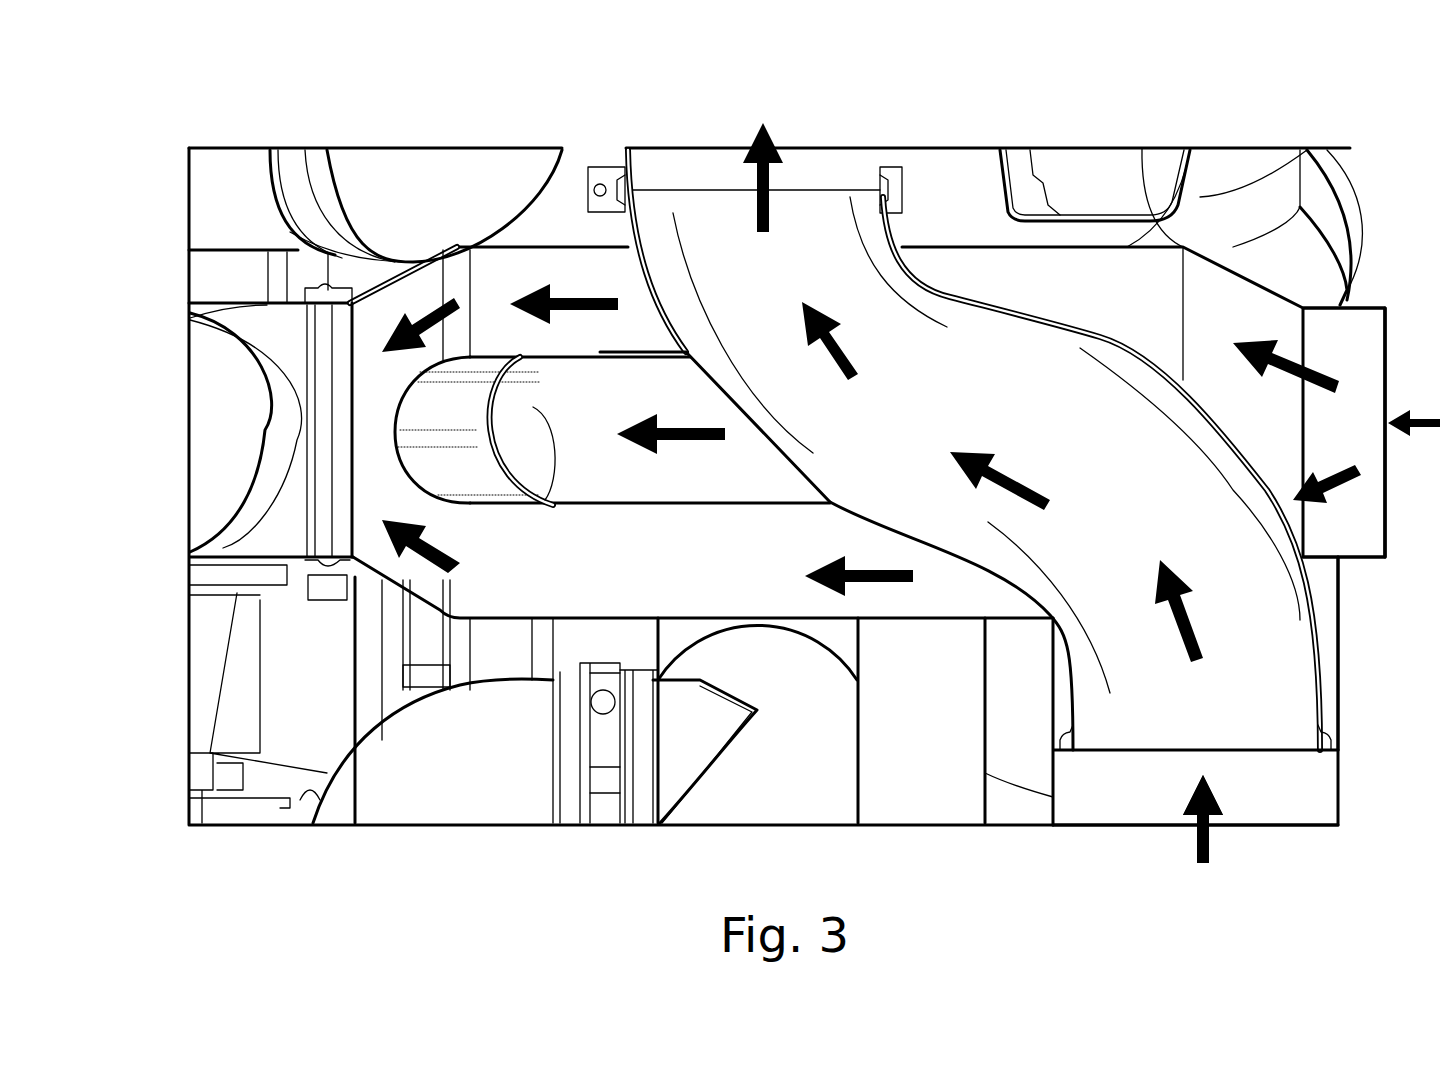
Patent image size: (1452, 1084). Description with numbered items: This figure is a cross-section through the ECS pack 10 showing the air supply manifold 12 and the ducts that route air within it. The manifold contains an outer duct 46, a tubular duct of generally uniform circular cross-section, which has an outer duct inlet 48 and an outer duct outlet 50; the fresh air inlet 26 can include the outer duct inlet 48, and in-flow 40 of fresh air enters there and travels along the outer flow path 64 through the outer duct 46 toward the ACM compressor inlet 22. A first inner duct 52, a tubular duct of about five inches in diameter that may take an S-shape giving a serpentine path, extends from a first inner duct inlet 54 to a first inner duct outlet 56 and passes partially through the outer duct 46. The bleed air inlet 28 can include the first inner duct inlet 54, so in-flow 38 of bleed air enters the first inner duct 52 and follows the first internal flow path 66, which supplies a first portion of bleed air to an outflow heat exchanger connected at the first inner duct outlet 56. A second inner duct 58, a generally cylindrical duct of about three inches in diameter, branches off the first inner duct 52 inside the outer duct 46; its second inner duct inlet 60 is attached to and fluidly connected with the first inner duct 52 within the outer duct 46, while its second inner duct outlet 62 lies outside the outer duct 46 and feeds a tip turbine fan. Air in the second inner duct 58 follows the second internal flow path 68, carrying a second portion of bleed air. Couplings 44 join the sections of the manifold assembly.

The ECS pack 10 is at (293, 139).
The air supply manifold 12 is at (1228, 264).
The ACM compressor inlet 22 is at (265, 305).
The fresh air inlet 26 is at (1386, 337).
The bleed air inlet 28 is at (1107, 828).
The in-flow of bleed air 38 is at (1210, 840).
The in-flow of fresh air 40 is at (1432, 420).
The couplings 44 is at (600, 160).
The outer duct 46 is at (1142, 148).
The outer duct inlet 48 is at (1384, 308).
The outer duct outlet 50 is at (295, 232).
The first inner duct 52 is at (1318, 580).
The first inner duct inlet 54 is at (1330, 747).
The first inner duct outlet 56 is at (890, 190).
The second inner duct 58 is at (557, 448).
The second inner duct inlet 60 is at (827, 502).
The second inner duct outlet 62 is at (570, 505).
The outer flow path 64 is at (445, 567).
The first internal flow path 66 is at (800, 313).
The second internal flow path 68 is at (686, 440).